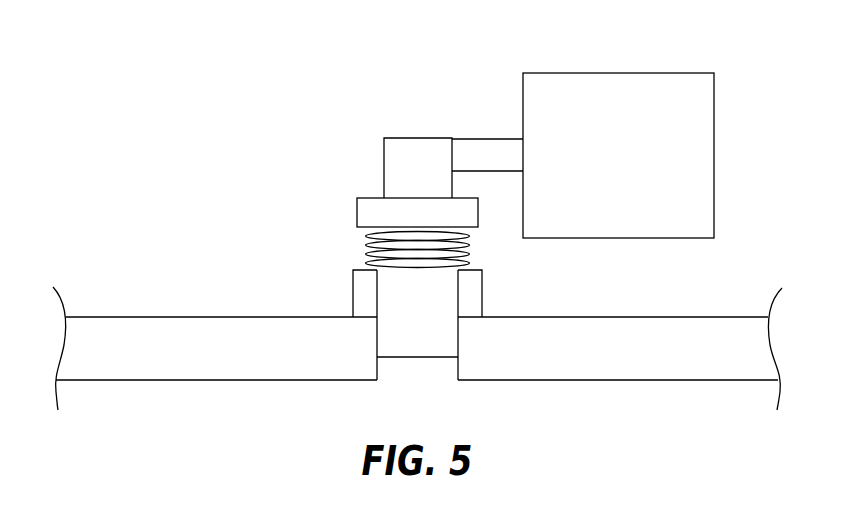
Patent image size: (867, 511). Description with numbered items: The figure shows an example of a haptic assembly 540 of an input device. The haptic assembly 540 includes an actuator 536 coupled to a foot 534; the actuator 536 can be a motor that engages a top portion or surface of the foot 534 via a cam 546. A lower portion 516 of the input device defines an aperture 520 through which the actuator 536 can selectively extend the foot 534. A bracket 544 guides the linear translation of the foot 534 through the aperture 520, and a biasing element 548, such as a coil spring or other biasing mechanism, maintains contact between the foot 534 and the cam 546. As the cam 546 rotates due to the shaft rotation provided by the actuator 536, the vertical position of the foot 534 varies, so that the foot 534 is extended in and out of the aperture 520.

The lower portion 516 is at (227, 365).
The aperture 520 is at (448, 388).
The foot 534 is at (425, 340).
The actuator 536 is at (617, 100).
The haptic assembly 540 is at (408, 144).
The bracket 544 is at (360, 292).
The cam 546 is at (393, 168).
The biasing element 548 is at (372, 250).